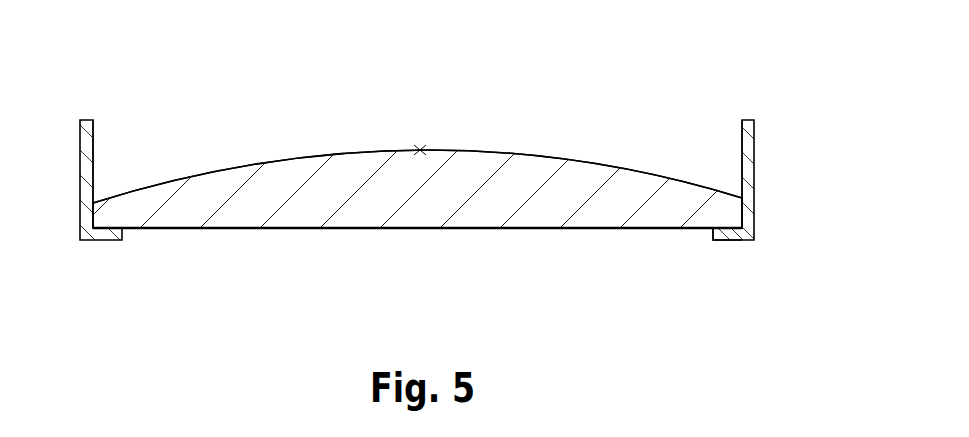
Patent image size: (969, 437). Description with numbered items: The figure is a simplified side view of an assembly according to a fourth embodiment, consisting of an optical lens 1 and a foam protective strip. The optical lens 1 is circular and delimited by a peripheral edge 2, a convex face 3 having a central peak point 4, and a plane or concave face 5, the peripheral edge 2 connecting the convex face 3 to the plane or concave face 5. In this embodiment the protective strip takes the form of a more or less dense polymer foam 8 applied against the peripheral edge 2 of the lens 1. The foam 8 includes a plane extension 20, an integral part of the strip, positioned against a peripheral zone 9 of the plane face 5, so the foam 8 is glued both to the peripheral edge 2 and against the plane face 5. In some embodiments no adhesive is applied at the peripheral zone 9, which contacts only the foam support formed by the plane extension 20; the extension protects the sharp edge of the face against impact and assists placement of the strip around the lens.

The optical lens 1 is at (526, 172).
The peripheral edge 2 is at (450, 192).
The convex face 3 is at (218, 172).
The central peak point 4 is at (414, 150).
The plane or concave face 5 is at (417, 230).
The polymer foam 8 is at (760, 139).
The peripheral zone 9 is at (727, 241).
The plane extension 20 is at (100, 240).